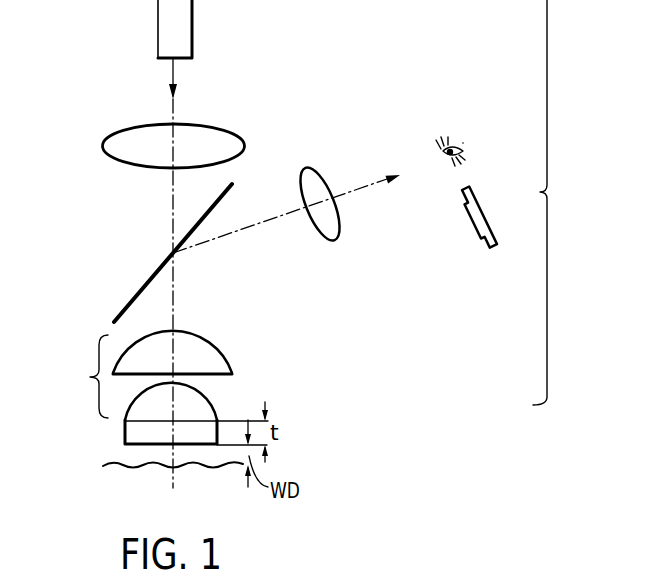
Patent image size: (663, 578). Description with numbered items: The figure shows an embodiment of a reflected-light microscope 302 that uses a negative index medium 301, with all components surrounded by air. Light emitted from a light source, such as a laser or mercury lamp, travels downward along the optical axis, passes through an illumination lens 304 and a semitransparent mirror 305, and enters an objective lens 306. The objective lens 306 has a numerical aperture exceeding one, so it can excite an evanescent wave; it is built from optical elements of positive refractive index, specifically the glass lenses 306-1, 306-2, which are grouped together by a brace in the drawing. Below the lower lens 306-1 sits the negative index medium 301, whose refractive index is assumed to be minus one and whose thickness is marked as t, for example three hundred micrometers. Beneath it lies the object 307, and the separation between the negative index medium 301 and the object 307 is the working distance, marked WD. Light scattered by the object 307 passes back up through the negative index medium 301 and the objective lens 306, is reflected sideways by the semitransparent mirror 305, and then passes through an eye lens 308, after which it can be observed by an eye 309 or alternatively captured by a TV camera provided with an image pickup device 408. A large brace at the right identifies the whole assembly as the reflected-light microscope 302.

The negative index medium 301 is at (125, 433).
The reflected-light microscope 302 is at (559, 202).
The illumination lens 304 is at (207, 132).
The semitransparent mirror 305 is at (128, 303).
The objective lens 306 is at (180, 387).
The lens 306-1 is at (203, 407).
The lens 306-2 is at (212, 360).
The object 307 is at (113, 464).
The eye lens 308 is at (330, 236).
The eye 309 is at (466, 150).
The image pickup device 408 is at (482, 213).